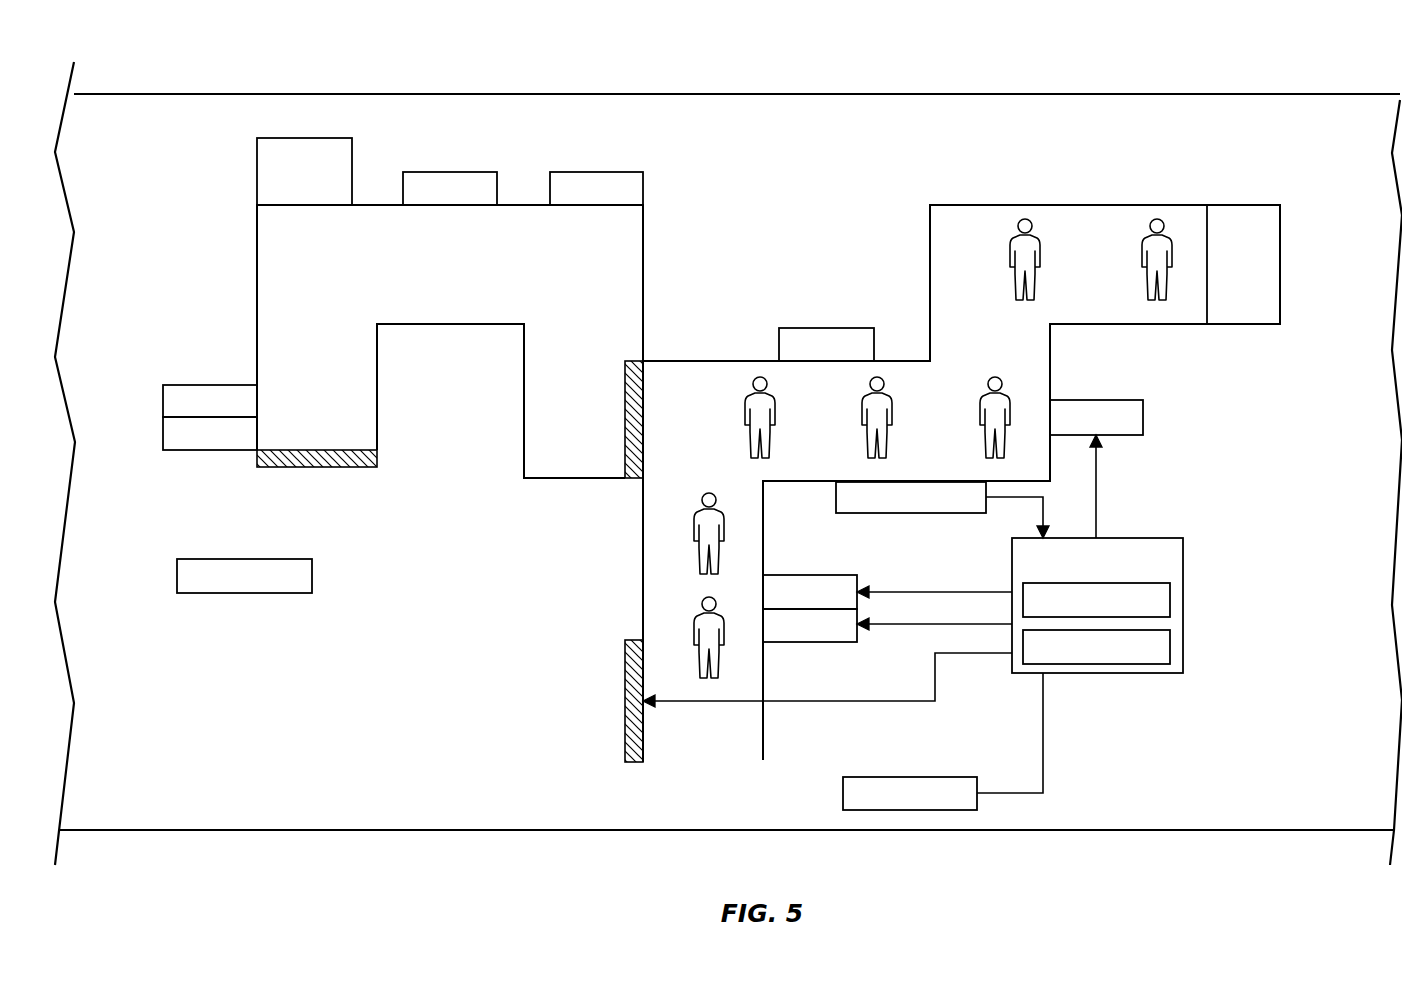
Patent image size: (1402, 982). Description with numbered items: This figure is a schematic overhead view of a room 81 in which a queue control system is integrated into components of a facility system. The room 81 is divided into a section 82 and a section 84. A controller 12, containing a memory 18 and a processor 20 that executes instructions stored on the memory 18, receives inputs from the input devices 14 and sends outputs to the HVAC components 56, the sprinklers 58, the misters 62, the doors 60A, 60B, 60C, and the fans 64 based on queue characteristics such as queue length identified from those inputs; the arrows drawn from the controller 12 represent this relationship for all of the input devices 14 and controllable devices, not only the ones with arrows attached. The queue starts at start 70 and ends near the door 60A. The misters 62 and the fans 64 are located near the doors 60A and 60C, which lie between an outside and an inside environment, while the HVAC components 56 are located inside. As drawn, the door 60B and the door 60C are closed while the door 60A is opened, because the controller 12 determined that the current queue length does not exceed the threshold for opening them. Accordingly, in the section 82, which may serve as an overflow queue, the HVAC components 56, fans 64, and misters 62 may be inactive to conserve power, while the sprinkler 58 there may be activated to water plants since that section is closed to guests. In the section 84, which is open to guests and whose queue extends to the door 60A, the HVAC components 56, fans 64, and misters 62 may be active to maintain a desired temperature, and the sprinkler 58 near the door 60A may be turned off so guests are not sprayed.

The controller 12 is at (1095, 673).
The input device 14 is at (302, 138).
The memory 18 is at (1170, 645).
The processor 20 is at (1170, 599).
The HVAC component 56 is at (453, 170).
The sprinkler 58 is at (245, 560).
The door 60A is at (625, 698).
The door 60B is at (625, 417).
The door 60C is at (316, 470).
The mister 62 is at (211, 450).
The fan 64 is at (211, 385).
The start 70 is at (1243, 205).
The room 81 is at (1298, 32).
The section 82 is at (460, 484).
The section 84 is at (760, 216).